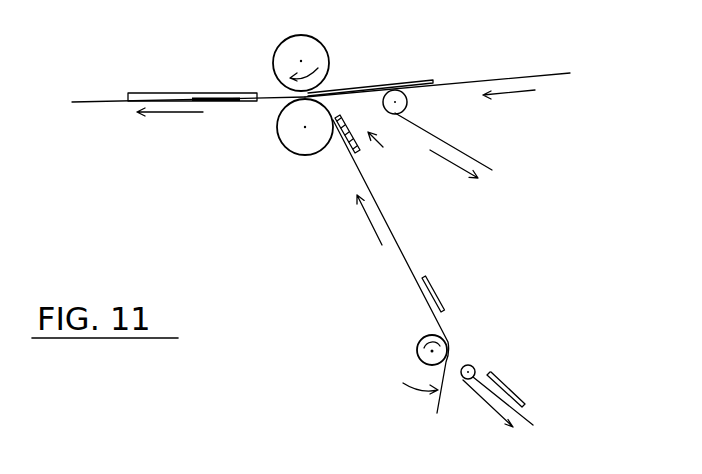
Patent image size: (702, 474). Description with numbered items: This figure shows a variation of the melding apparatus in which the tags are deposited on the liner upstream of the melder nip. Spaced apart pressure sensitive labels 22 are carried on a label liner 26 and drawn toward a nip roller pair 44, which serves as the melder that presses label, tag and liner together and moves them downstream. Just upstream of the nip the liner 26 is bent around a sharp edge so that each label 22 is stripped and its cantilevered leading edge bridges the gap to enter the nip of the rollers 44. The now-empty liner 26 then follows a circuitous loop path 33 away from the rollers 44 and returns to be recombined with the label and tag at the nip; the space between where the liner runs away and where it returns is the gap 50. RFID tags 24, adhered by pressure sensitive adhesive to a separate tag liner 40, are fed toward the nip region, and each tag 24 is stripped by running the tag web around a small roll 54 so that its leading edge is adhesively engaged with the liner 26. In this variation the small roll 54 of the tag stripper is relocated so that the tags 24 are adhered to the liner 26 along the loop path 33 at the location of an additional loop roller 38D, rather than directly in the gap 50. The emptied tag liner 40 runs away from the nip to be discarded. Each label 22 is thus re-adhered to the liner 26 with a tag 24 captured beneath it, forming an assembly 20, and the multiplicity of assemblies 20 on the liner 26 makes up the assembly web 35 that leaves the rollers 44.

The assembly 20 is at (167, 90).
The assembly web 35 is at (105, 105).
The nip roller pair 44 is at (337, 38).
The pressure sensitive label 22 is at (417, 78).
The label liner 26 is at (549, 75).
The gap 50 is at (393, 152).
The RFID tag 24 is at (431, 282).
The additional loop roller 38D is at (420, 340).
The loop path 33 is at (401, 378).
The small roll 54 is at (470, 380).
The tag liner 40 is at (528, 420).